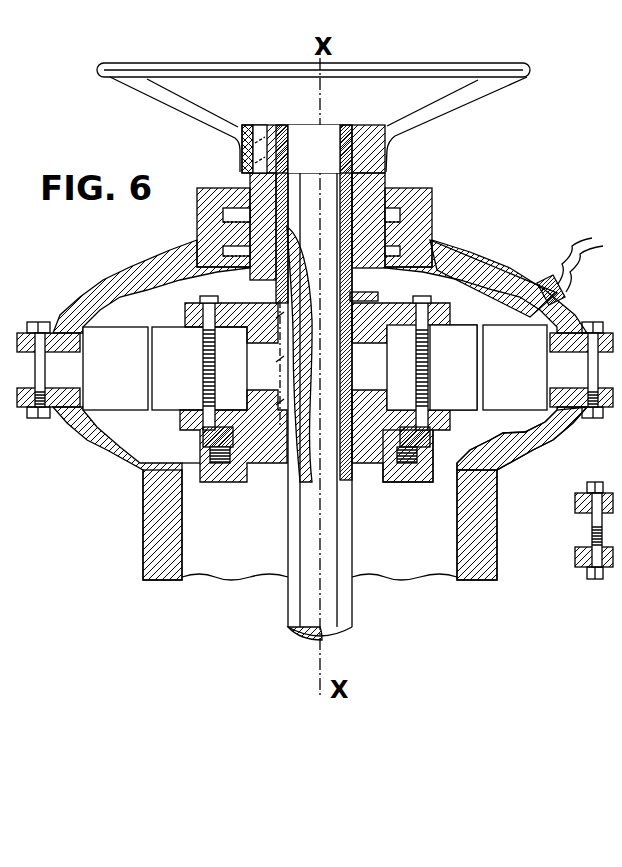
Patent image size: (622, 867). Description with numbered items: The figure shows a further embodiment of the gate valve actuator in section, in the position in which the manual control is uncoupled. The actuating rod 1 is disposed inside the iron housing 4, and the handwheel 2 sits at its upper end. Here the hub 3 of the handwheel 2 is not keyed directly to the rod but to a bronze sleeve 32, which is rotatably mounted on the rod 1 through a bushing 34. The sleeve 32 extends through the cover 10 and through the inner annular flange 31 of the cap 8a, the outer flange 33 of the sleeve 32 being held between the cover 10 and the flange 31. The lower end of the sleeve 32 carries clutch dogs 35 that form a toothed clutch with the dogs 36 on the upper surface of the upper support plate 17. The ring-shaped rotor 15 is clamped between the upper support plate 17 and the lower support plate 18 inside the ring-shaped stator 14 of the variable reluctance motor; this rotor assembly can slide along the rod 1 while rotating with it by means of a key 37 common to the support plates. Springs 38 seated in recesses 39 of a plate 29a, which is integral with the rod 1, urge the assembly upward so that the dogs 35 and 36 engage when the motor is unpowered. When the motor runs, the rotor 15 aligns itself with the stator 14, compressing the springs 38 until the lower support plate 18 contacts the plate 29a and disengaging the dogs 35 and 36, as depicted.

The actuating rod 1 is at (356, 600).
The handwheel 2 is at (410, 62).
The hub 3 is at (375, 127).
The housing 4 is at (490, 563).
The cap 8a is at (503, 258).
The cover 10 is at (434, 184).
The stator 14 is at (510, 410).
The rotor 15 is at (463, 327).
The upper support plate 17 is at (448, 300).
The lower support plate 18 is at (456, 417).
The plate 29a is at (432, 484).
The inner annular flange 31 is at (245, 268).
The bronze sleeve 32 is at (272, 184).
The outer flange 33 is at (198, 232).
The bushing 34 is at (273, 127).
The clutch dogs 35 is at (372, 285).
The dogs 36 is at (348, 297).
The key 37 is at (279, 381).
The springs 38 is at (228, 470).
The recesses 39 is at (210, 453).